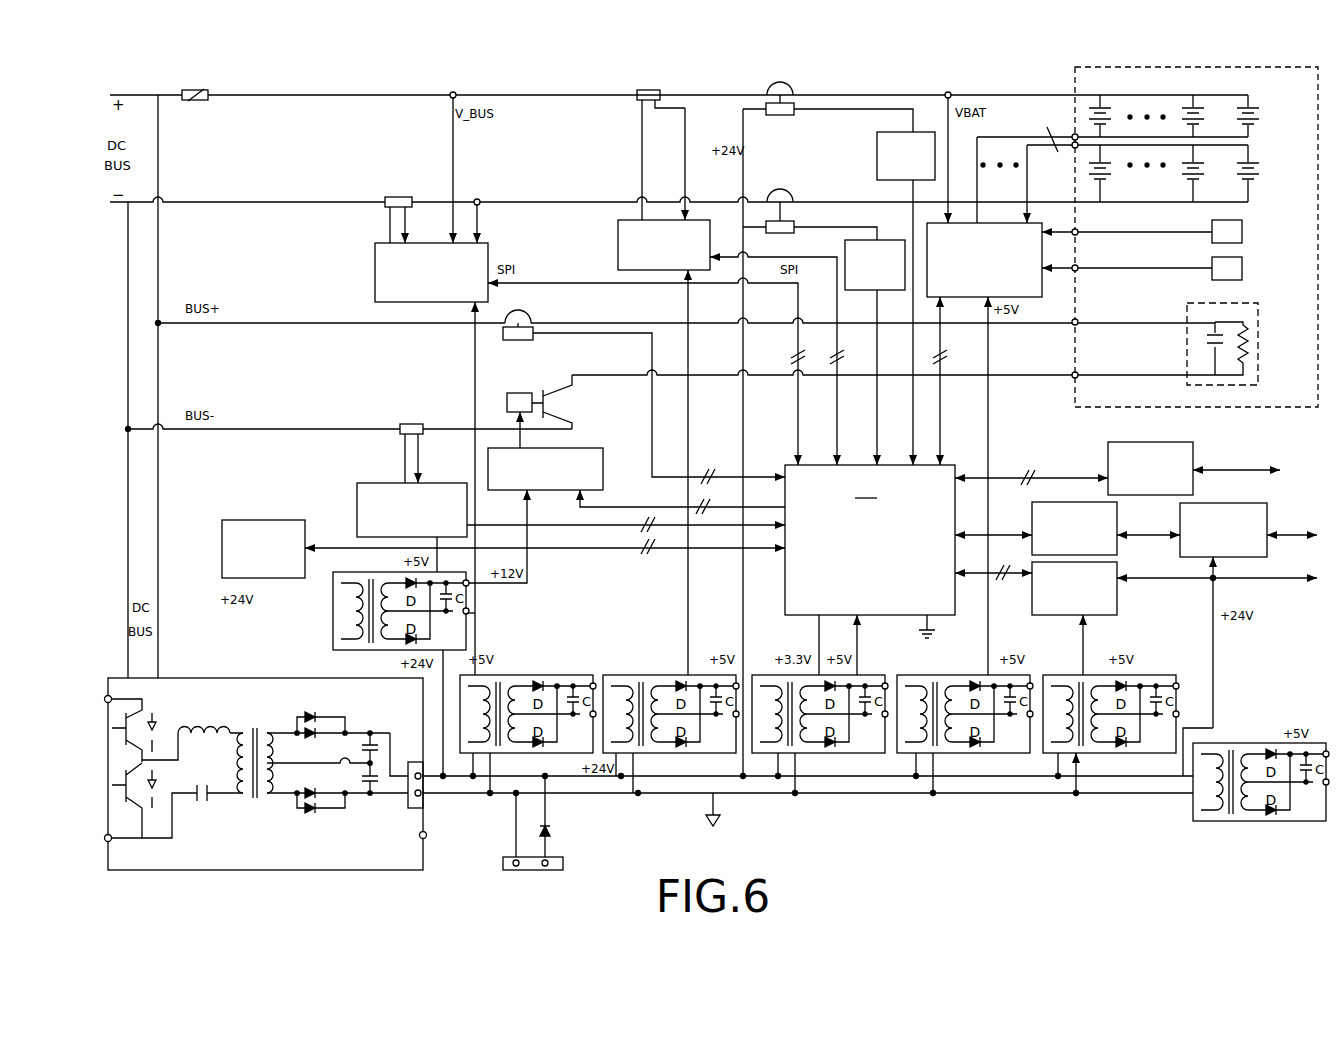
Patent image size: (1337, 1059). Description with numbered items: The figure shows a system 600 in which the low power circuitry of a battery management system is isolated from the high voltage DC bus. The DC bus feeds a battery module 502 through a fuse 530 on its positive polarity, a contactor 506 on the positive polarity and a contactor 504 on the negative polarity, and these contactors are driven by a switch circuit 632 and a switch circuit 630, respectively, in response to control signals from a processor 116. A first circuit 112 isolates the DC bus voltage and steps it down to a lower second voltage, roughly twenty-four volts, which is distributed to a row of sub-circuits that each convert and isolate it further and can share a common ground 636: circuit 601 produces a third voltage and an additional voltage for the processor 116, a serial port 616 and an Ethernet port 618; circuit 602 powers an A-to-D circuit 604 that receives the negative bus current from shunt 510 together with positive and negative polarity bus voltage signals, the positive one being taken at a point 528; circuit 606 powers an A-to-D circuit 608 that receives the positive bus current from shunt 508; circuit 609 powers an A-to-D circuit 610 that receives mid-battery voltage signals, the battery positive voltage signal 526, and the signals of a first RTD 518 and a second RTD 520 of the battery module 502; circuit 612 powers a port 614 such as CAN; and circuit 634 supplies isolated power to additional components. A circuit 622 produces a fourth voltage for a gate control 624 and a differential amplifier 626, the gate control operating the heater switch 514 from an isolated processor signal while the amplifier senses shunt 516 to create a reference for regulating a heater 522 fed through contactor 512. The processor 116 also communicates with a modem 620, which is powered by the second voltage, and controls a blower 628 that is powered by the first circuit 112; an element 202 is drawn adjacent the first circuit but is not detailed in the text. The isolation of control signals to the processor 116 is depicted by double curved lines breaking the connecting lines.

The system 600 is at (175, 45).
The fuse 530 is at (198, 101).
The bus voltage sensor 528 is at (453, 91).
The shunt 508 is at (637, 91).
The shunt 510 is at (385, 198).
The A-to-D circuit 604 is at (375, 268).
The A-to-D circuit 608 is at (618, 242).
The contactor 506 is at (800, 116).
The contactor 504 is at (796, 186).
The switch circuit 632 is at (890, 180).
The switch circuit 630 is at (893, 240).
The positive polarity voltage signal 526 is at (948, 91).
The battery module 502 is at (1249, 67).
The first Resistance Temperature Detector 518 is at (1242, 232).
The second Resistance Temperature Detector 520 is at (1242, 268).
The A-to-D circuit 610 is at (1025, 300).
The heater 522 is at (1196, 385).
The contactor 512 is at (545, 342).
The switch 514 is at (511, 386).
The shunt 516 is at (405, 421).
The gate control 624 is at (588, 448).
The differential amplifier 626 is at (392, 483).
The blower 628 is at (243, 520).
The circuit 622 is at (333, 626).
The first circuit 112 is at (283, 678).
The connector 202 is at (505, 857).
The ground 636 is at (728, 823).
The circuit 602 is at (545, 675).
The circuit 606 is at (623, 675).
The circuit 601 is at (863, 675).
The circuit 609 is at (943, 675).
The circuit 612 is at (1148, 675).
The circuit 634 is at (1238, 743).
The processor 116 is at (870, 570).
The port 618 is at (1152, 442).
The modem 620 is at (1226, 503).
The port 616 is at (1117, 516).
The port 614 is at (1117, 603).